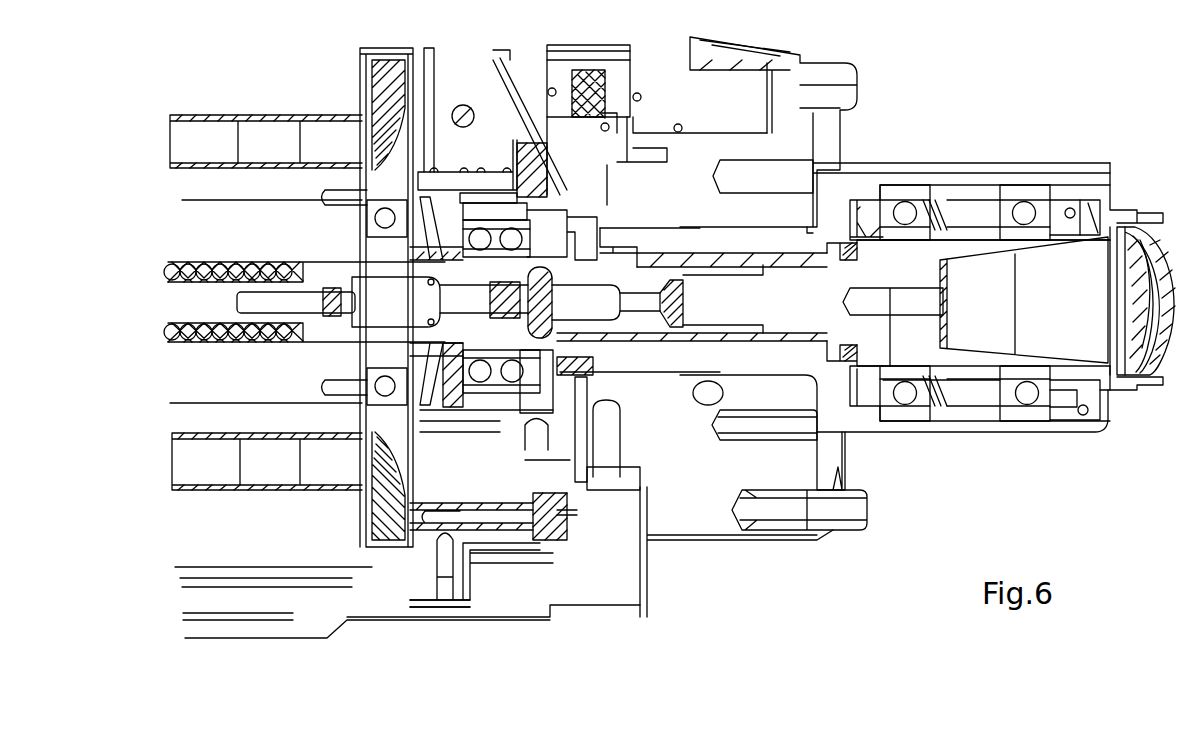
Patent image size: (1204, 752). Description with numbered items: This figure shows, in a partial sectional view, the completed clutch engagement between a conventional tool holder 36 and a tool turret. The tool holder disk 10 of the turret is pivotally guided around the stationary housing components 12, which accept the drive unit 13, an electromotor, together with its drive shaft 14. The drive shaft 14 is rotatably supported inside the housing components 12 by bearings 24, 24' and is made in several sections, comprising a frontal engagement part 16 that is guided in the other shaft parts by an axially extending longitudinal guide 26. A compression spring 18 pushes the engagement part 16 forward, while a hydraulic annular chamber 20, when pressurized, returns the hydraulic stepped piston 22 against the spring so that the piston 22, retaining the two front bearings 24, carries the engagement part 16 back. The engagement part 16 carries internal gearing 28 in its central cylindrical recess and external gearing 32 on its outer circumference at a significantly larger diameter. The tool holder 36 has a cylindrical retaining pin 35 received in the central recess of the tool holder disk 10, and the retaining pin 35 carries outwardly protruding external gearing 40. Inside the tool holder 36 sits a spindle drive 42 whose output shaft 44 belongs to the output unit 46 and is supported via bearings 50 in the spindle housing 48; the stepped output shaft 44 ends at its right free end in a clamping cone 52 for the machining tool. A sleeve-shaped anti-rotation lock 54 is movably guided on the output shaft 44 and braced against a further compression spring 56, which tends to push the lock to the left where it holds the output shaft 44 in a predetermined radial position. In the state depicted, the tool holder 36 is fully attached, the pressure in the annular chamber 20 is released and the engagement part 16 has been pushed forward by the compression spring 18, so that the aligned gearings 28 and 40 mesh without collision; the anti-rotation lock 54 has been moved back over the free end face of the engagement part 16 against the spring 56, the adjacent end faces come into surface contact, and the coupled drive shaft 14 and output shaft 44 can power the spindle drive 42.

The tool holder disk 10 is at (827, 147).
The stationary housing components 12 is at (305, 103).
The drive unit 13 is at (217, 143).
The drive shaft 14 is at (210, 383).
The frontal engagement part 16 is at (566, 252).
The compression spring 18 is at (198, 262).
The hydraulic annular chamber 20 is at (500, 420).
The hydraulic stepped piston 22 is at (483, 210).
The front bearings 24 is at (488, 351).
The bearings 24' is at (332, 297).
The longitudinal guide 26 is at (363, 290).
The internal gearing 28 is at (692, 388).
The external gearing 40 is at (605, 372).
The external gearing 32 is at (590, 480).
The retaining pin 35 is at (768, 365).
The tool holder 36 is at (906, 213).
The spindle drive 42 is at (786, 303).
The output shaft 44 is at (1040, 183).
The output unit 46 is at (1032, 436).
The spindle housing 48 is at (1023, 210).
The bearings 50 is at (913, 260).
The clamping cone 52 is at (1074, 300).
The anti-rotation lock 54 is at (634, 250).
The compression spring 56 is at (686, 268).